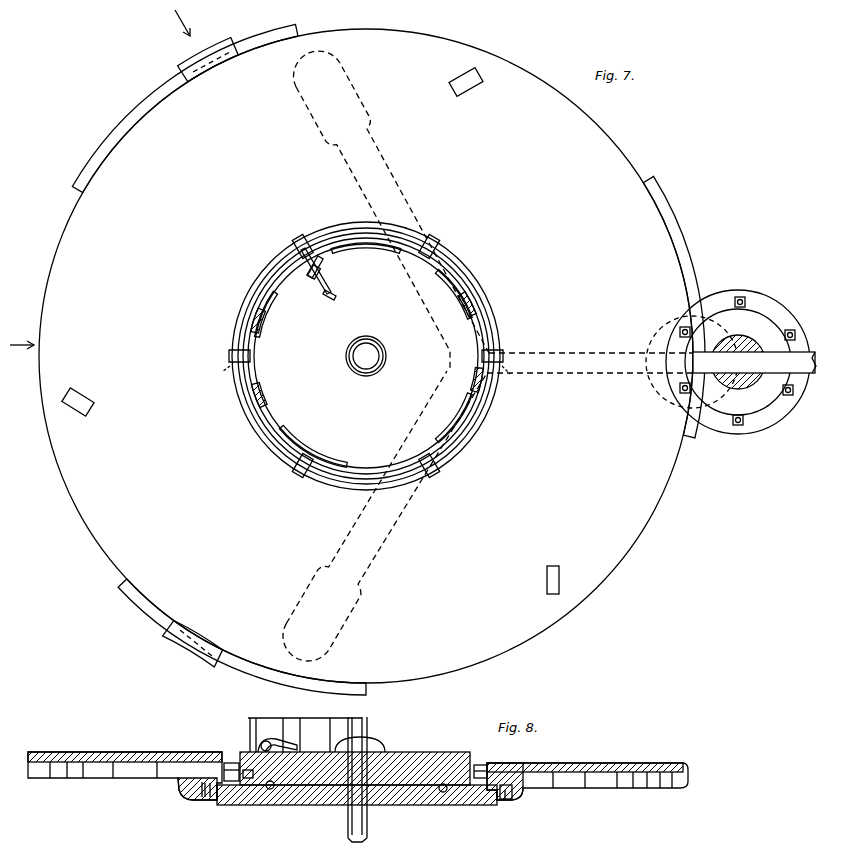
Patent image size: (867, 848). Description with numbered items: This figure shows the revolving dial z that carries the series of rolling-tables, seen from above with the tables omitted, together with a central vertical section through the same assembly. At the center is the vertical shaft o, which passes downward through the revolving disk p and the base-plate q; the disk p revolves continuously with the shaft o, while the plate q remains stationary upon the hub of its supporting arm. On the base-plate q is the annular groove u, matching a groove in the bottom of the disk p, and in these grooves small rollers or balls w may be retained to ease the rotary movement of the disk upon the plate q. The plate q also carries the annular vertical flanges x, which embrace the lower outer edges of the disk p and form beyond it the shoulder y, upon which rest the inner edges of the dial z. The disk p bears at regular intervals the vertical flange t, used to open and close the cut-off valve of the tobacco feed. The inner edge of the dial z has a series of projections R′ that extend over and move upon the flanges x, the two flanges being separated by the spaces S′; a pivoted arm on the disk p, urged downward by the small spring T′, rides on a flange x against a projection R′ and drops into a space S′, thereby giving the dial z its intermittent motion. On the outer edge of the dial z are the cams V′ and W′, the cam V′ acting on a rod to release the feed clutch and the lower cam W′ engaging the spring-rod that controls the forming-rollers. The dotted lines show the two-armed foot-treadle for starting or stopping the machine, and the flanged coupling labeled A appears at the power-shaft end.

In FIG. 7, the revolving dial z is at (366, 356).
In FIG. 8, the revolving dial z is at (134, 752).
In FIG. 7, the cam W′ is at (124, 112).
In FIG. 7, the cam V′ is at (208, 52).
In FIG. 7, the projection R′ is at (222, 351).
In FIG. 8, the projection R′ is at (356, 763).
In FIG. 7, the space S′ is at (360, 377).
In FIG. 7, the annular vertical flange x is at (468, 275).
In FIG. 8, the annular vertical flange x is at (506, 762).
In FIG. 7, the vertical flange t is at (334, 252).
In FIG. 8, the vertical flange t is at (299, 731).
In FIG. 7, the vertical shaft o is at (383, 356).
In FIG. 8, the vertical shaft o is at (383, 748).
In FIG. 7, the revolving disk p is at (380, 395).
In FIG. 8, the revolving disk p is at (405, 757).
In FIG. 7, the flange A is at (741, 362).
In FIG. 7, the spring T′ is at (318, 274).
In FIG. 8, the spring T′ is at (276, 740).
In FIG. 8, the roller or ball w is at (270, 790).
In FIG. 8, the base-plate q is at (418, 806).
In FIG. 8, the annular groove u is at (446, 806).
In FIG. 8, the shoulder y is at (208, 800).